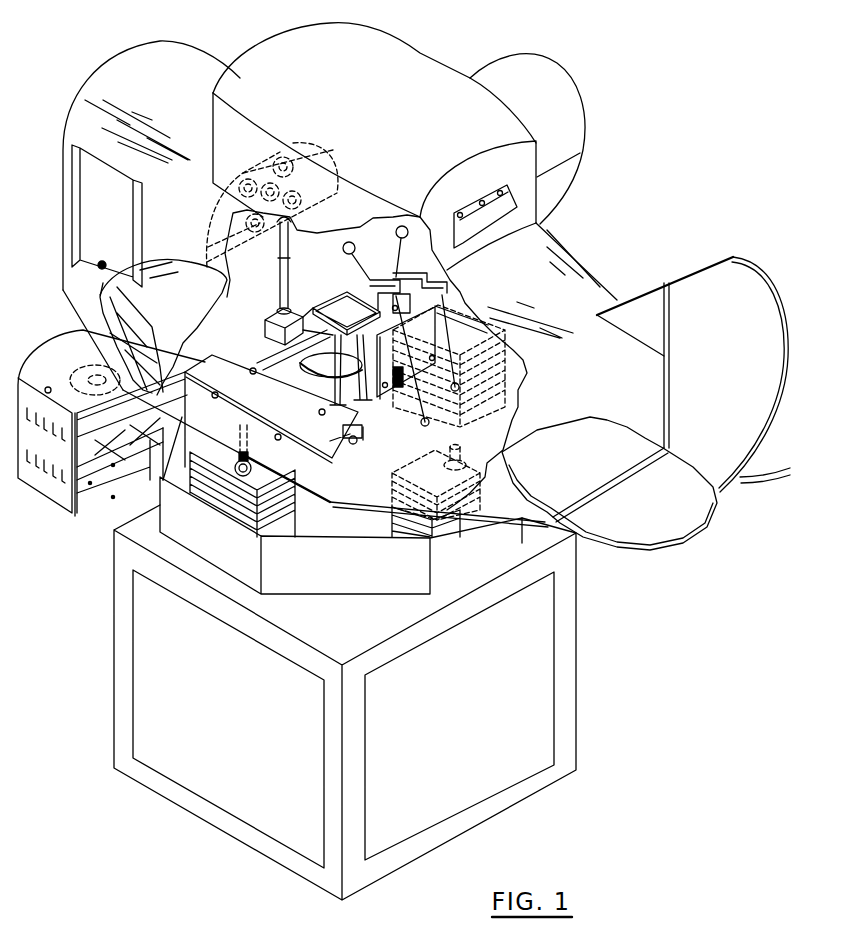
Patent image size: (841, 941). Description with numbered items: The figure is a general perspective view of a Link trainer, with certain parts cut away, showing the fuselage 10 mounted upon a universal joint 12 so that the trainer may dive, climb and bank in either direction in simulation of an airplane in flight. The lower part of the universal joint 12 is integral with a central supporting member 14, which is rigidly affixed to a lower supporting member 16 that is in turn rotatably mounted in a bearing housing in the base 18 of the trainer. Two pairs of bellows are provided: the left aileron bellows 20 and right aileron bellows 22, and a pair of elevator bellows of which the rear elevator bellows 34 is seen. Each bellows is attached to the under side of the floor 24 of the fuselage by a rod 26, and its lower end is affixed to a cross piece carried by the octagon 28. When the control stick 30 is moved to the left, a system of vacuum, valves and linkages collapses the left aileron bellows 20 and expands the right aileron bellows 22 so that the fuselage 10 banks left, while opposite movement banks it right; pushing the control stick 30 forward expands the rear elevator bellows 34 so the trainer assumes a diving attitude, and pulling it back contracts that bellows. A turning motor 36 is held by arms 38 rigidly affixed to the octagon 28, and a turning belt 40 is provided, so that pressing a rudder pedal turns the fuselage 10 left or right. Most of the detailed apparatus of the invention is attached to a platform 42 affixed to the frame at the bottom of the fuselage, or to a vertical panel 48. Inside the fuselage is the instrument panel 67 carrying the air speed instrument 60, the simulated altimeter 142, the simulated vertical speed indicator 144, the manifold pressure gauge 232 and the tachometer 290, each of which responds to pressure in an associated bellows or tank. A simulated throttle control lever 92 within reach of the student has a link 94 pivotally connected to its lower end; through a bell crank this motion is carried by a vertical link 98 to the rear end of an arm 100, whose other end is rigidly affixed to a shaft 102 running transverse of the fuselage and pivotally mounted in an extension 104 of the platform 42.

The fuselage 10 is at (565, 265).
The universal joint 12 is at (338, 312).
The central supporting member 14 is at (280, 347).
The lower supporting member 16 is at (327, 383).
The base 18 is at (567, 663).
The left aileron bellows 20 is at (212, 490).
The right aileron bellows 22 is at (500, 355).
The floor 24 is at (313, 497).
The rod 26 is at (238, 462).
The octagon 28 is at (368, 582).
The control stick 30 is at (276, 273).
The rear elevator bellows 34 is at (498, 458).
The turning motor 36 is at (52, 493).
The arms 38 is at (115, 445).
The turning belt 40 is at (152, 467).
The platform 42 is at (303, 438).
The panel 48 is at (440, 315).
The air speed instrument 60 is at (207, 245).
The instrument panel 67 is at (213, 218).
The simulated throttle control lever 92 is at (357, 257).
The link 94 is at (382, 277).
The vertical link 98 is at (423, 413).
The arm 100 is at (405, 410).
The shaft 102 is at (364, 442).
The extension 104 is at (352, 443).
The simulated altimeter 142 is at (246, 182).
The simulated vertical speed indicator 144 is at (284, 157).
The manifold pressure gauge 232 is at (333, 153).
The tachometer 290 is at (334, 172).